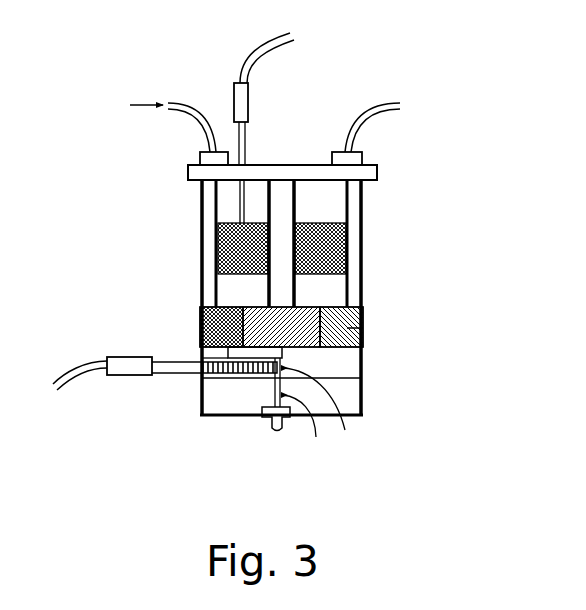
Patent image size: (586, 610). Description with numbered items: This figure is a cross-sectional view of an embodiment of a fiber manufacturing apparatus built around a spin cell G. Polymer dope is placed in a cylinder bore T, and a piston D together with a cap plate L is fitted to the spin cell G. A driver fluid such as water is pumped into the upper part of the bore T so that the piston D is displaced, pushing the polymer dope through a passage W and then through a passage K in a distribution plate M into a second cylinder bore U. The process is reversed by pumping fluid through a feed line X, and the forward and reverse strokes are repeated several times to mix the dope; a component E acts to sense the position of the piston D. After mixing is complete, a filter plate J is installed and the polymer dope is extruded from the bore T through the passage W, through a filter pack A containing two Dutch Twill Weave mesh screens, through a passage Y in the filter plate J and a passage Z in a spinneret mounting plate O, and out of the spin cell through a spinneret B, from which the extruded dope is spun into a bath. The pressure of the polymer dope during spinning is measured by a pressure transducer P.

The position sensor component E is at (236, 101).
The feed line X is at (402, 103).
The cap plate L is at (380, 171).
The spin cell G is at (190, 207).
The piston D is at (214, 254).
The cylinder bore T is at (238, 289).
The second cylinder bore U is at (333, 285).
The distribution plate M is at (371, 314).
The passage K is at (363, 328).
The passage W is at (204, 324).
The filter pack A is at (241, 351).
The filter plate J is at (372, 362).
The spinneret mounting plate O is at (372, 395).
The pressure transducer P is at (143, 382).
The spinneret B is at (267, 423).
The passage Y is at (316, 410).
The passage Z is at (300, 429).